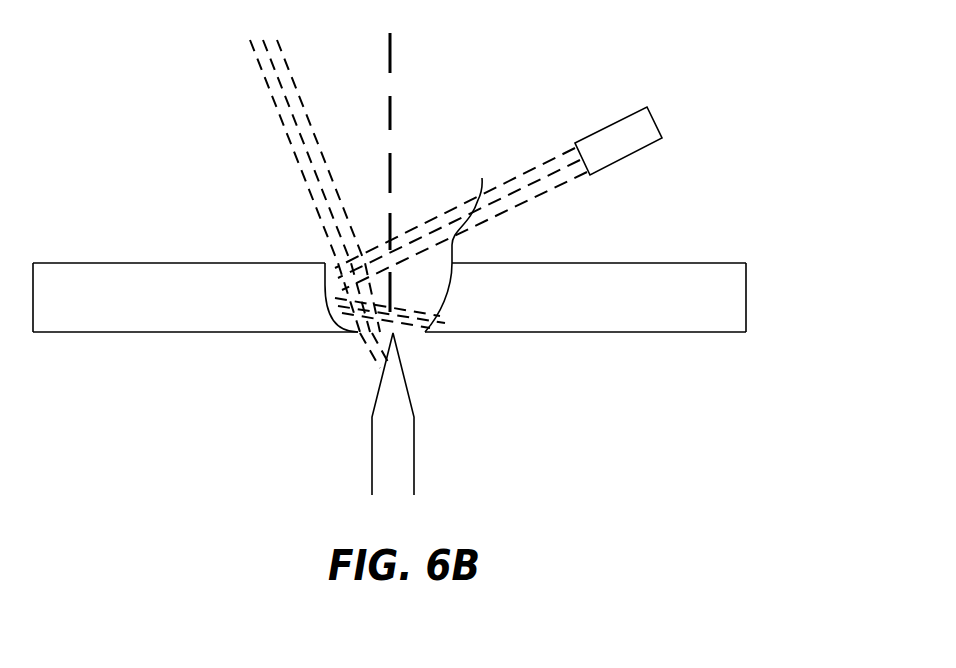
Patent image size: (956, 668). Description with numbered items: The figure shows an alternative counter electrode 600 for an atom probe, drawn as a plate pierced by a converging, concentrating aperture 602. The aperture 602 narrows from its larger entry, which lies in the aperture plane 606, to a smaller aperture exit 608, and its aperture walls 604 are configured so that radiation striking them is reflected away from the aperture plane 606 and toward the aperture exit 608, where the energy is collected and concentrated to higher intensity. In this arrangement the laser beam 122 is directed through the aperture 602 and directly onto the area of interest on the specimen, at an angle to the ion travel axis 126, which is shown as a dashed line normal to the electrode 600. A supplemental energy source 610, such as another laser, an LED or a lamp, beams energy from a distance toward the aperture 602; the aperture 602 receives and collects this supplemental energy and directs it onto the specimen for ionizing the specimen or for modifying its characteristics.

The counter electrode 600 is at (685, 262).
The laser beam 122 is at (260, 62).
The ion travel axis 126 is at (390, 55).
The concentrating aperture 602 is at (348, 262).
The aperture walls 604 is at (330, 292).
The aperture plane 606 is at (464, 242).
The aperture exit 608 is at (420, 330).
The supplemental energy source 610 is at (636, 107).